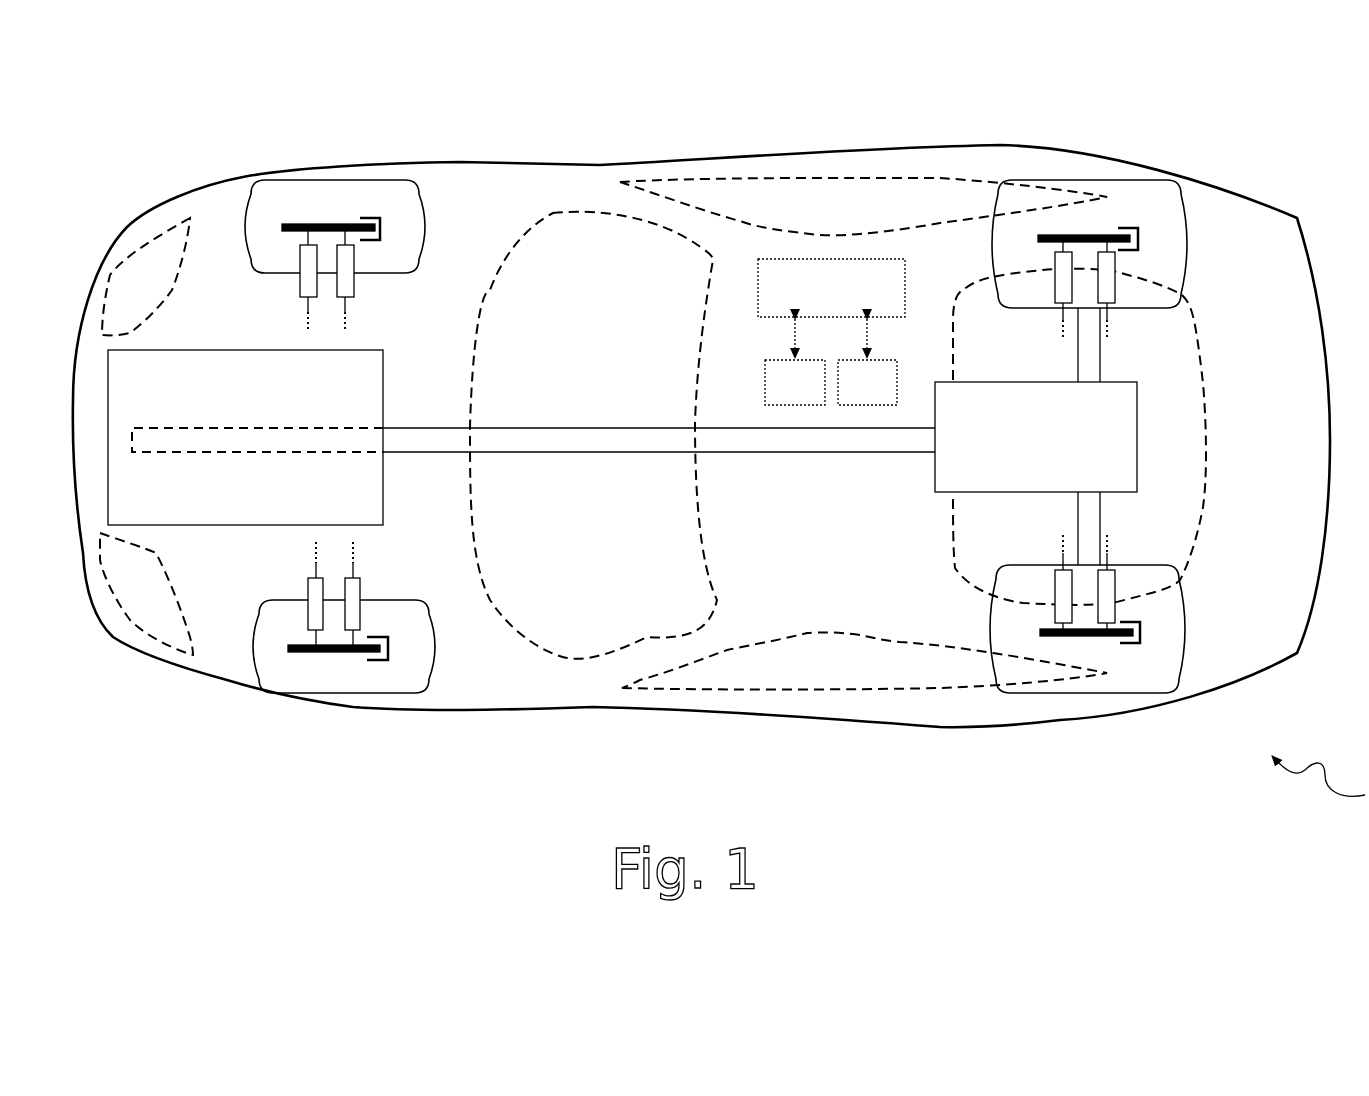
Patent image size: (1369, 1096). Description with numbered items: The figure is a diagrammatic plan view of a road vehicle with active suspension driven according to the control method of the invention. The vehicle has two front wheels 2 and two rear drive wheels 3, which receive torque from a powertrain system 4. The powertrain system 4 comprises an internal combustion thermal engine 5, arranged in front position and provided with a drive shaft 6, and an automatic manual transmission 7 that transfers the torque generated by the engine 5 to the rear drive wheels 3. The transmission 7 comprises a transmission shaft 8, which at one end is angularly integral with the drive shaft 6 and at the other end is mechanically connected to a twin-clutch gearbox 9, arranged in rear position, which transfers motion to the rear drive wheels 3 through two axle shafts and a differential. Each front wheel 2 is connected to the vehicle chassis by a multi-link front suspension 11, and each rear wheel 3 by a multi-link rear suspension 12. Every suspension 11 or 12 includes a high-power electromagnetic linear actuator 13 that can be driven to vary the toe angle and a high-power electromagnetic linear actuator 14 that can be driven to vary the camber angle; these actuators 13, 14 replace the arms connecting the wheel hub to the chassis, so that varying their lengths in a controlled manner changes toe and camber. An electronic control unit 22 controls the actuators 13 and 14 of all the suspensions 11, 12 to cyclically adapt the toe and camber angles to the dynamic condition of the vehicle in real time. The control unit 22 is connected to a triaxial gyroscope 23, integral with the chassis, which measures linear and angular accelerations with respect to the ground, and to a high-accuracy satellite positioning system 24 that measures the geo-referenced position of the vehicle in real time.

The front wheel 2 is at (268, 198).
The rear drive wheel 3 is at (1172, 197).
The powertrain system 4 is at (158, 190).
The internal combustion thermal engine 5 is at (117, 378).
The drive shaft 6 is at (233, 435).
The automatic manual transmission 7 is at (733, 138).
The transmission shaft 8 is at (727, 440).
The twin-clutch gearbox 9 is at (910, 493).
The front suspension 11 is at (377, 257).
The rear suspension 12 is at (1138, 263).
The electromagnetic linear actuator 13 is at (308, 280).
The electromagnetic linear actuator 14 is at (345, 282).
The electronic control unit 22 is at (831, 308).
The triaxial gyroscope 23 is at (795, 382).
The satellite positioning system 24 is at (867, 382).